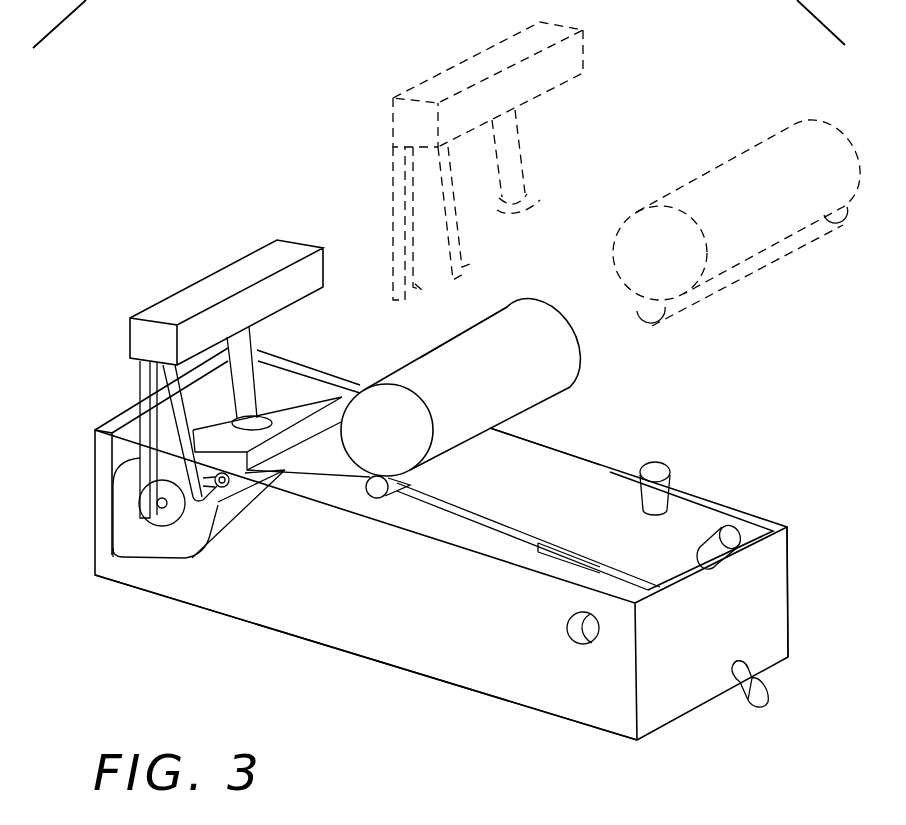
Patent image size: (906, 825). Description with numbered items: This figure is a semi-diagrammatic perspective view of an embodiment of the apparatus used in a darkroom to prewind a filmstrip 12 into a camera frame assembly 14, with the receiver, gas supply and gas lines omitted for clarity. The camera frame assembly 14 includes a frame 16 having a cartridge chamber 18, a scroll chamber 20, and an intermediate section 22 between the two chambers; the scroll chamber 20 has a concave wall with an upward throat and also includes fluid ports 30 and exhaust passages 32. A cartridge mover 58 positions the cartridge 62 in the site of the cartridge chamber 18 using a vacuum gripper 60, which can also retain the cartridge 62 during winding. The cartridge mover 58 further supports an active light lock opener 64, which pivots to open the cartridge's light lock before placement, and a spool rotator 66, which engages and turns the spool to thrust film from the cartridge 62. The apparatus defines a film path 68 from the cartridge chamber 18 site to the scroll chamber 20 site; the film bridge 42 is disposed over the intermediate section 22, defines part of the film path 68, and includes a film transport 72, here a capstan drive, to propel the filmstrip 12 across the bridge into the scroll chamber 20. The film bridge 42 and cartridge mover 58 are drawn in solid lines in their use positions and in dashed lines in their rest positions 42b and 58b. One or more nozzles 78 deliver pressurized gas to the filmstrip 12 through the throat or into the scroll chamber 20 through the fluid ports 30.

The filmstrip 12 is at (545, 446).
The camera frame assembly 14 is at (438, 680).
The frame 16 is at (265, 630).
The cartridge chamber 18 is at (130, 415).
The scroll chamber 20 is at (752, 530).
The intermediate section 22 is at (470, 532).
The fluid port 30 is at (740, 665).
The exhaust passage 32 is at (592, 642).
The film bridge 42 is at (586, 346).
The film bridge rest position 42b is at (740, 157).
The cartridge mover 58 is at (203, 290).
The cartridge mover rest position 58b is at (588, 31).
The vacuum gripper 60 is at (283, 397).
The cartridge 62 is at (135, 558).
The active light lock opener 64 is at (218, 507).
The spool rotator 66 is at (140, 473).
The film path 68 is at (557, 445).
The film transport 72 is at (505, 322).
The nozzle 78 is at (727, 527).